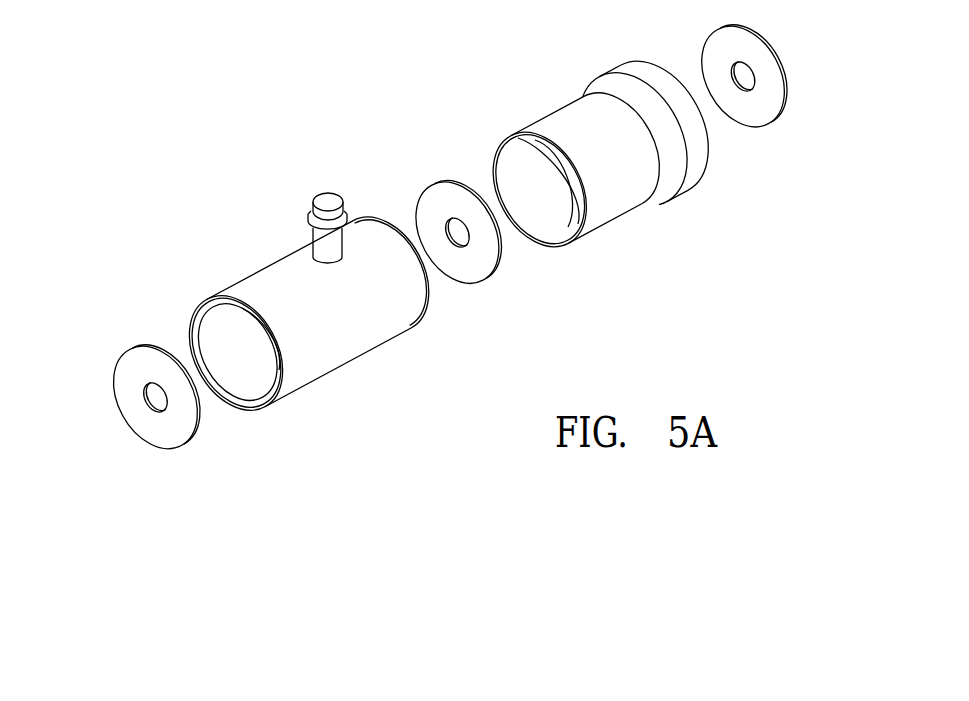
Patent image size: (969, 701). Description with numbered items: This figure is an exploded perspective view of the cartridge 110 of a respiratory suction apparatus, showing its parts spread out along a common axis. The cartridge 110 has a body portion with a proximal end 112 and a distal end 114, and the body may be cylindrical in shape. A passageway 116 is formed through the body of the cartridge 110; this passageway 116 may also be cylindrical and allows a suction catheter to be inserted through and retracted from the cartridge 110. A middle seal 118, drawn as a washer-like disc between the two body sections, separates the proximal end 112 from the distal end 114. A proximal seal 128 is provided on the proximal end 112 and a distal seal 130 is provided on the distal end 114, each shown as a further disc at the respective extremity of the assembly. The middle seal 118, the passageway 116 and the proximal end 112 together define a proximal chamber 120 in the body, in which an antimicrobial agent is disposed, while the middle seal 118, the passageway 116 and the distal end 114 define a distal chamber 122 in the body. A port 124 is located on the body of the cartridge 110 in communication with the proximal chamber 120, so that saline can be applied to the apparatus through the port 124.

The cartridge 110 is at (147, 174).
The proximal end 112 is at (333, 360).
The distal end 114 is at (610, 192).
The passageway 116 is at (227, 317).
The middle seal 118 is at (477, 268).
The proximal chamber 120 is at (243, 373).
The distal chamber 122 is at (677, 73).
The port 124 is at (328, 199).
The proximal seal 128 is at (175, 430).
The distal seal 130 is at (760, 101).